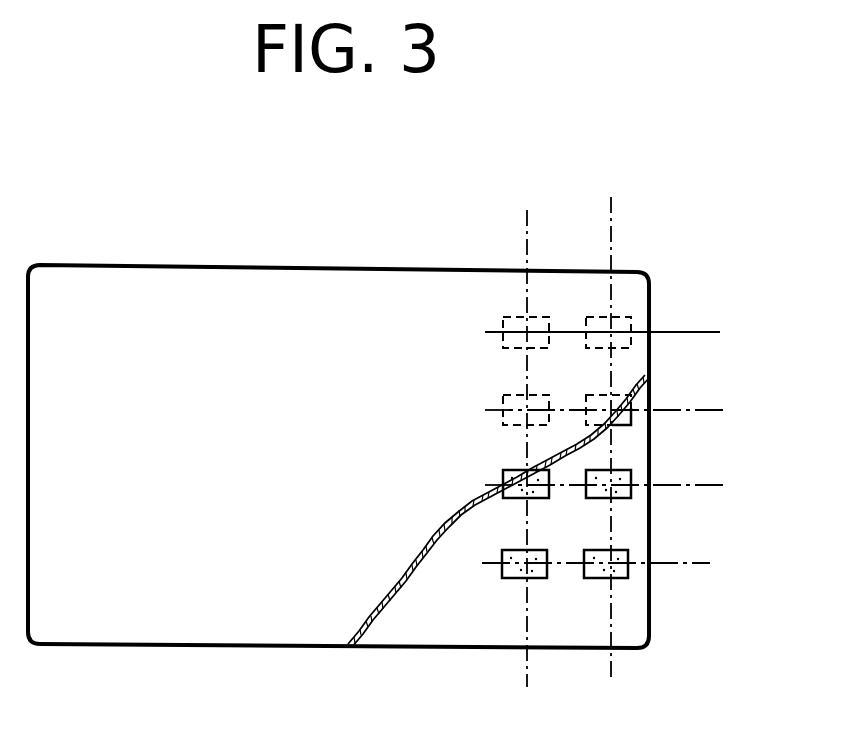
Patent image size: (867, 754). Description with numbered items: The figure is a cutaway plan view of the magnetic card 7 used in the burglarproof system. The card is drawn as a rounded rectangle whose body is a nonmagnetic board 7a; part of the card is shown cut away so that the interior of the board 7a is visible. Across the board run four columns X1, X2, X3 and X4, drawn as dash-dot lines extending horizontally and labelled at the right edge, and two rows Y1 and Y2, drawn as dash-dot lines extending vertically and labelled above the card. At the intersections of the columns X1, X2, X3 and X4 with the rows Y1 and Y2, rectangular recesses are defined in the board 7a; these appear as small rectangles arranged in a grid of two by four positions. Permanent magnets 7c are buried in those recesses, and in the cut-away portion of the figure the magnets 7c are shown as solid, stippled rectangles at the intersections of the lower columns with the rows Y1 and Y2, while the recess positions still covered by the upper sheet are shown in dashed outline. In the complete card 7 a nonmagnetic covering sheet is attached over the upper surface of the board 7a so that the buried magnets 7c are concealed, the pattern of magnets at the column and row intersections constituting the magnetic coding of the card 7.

The magnetic card 7 is at (273, 268).
The nonmagnetic board 7a is at (447, 616).
The permanent magnets 7c is at (626, 497).
The column X1 is at (628, 572).
The column X2 is at (629, 493).
The column X3 is at (629, 417).
The column X4 is at (629, 339).
The row Y1 is at (620, 419).
The row Y2 is at (535, 422).